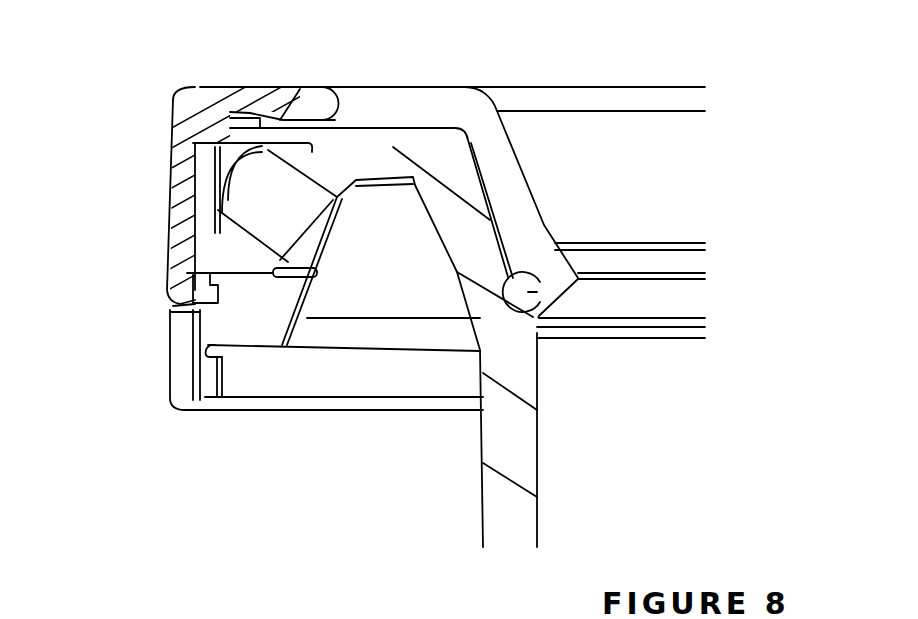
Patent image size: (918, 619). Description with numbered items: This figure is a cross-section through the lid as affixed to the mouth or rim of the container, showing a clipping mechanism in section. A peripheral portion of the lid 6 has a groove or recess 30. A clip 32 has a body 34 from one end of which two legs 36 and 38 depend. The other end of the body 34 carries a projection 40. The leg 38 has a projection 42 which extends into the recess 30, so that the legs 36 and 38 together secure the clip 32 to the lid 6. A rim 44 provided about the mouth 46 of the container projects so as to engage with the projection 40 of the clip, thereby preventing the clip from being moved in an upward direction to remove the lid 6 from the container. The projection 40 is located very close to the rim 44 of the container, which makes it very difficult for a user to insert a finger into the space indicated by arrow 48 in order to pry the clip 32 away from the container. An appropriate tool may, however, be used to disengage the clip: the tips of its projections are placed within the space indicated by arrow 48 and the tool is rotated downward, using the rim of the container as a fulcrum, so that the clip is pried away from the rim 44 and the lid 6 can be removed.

The lid 6 is at (388, 92).
The groove or recess 30 is at (333, 87).
The clip 32 is at (197, 80).
The body 34 is at (193, 141).
The leg 36 is at (268, 87).
The leg 38 is at (260, 137).
The projection 40 is at (178, 310).
The projection 42 is at (288, 126).
The rim 44 is at (223, 253).
The mouth 46 is at (393, 147).
The arrow 48 is at (158, 312).